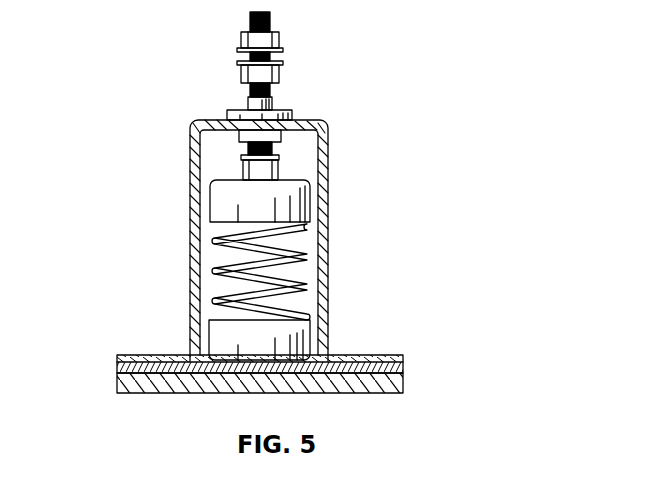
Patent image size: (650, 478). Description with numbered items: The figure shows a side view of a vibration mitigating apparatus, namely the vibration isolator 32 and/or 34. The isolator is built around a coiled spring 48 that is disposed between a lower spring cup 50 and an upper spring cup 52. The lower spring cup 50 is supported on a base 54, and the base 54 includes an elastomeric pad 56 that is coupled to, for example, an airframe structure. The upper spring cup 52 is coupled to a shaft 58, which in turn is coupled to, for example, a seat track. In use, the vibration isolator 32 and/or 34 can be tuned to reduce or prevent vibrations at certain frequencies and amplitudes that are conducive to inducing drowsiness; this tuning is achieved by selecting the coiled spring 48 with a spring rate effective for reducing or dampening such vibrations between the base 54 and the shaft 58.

The vibration isolator 32 is at (327, 18).
The vibration isolator 34 is at (213, 202).
The coiled spring 48 is at (217, 265).
The lower spring cup 50 is at (216, 338).
The upper spring cup 52 is at (213, 195).
The base 54 is at (117, 365).
The elastomeric pad 56 is at (117, 384).
The shaft 58 is at (248, 100).